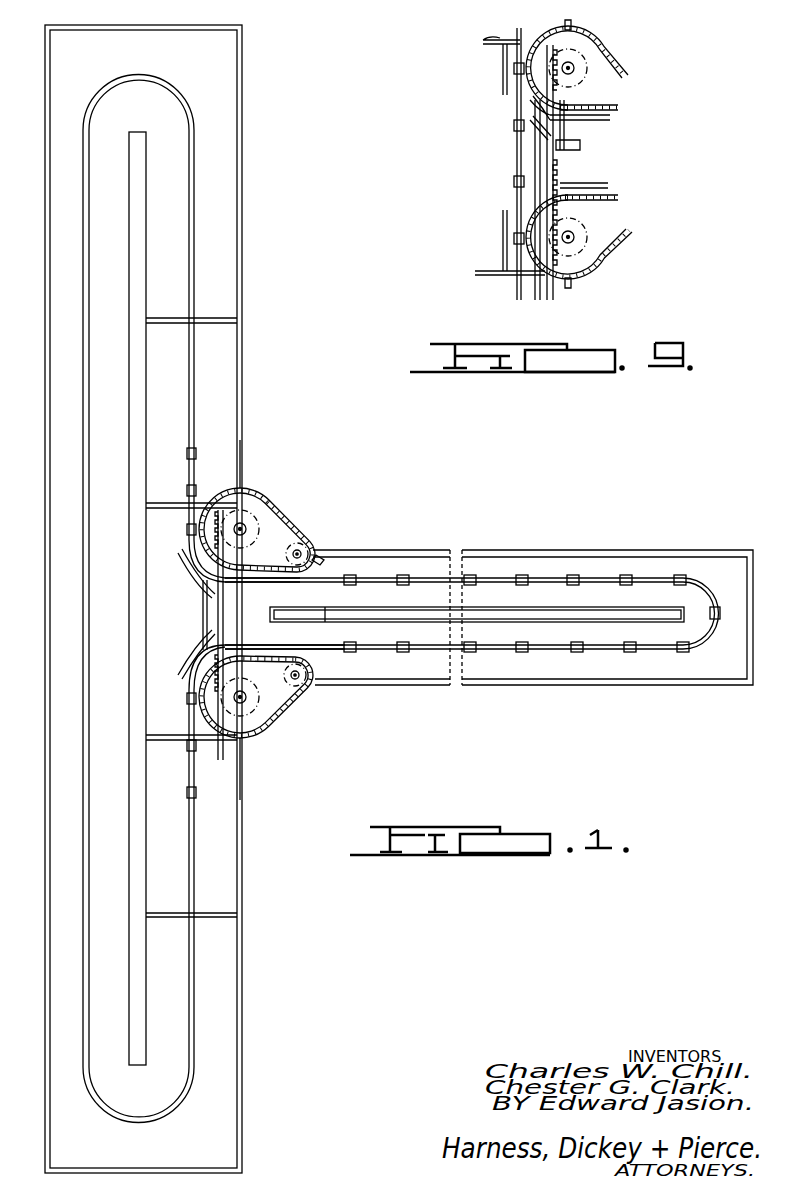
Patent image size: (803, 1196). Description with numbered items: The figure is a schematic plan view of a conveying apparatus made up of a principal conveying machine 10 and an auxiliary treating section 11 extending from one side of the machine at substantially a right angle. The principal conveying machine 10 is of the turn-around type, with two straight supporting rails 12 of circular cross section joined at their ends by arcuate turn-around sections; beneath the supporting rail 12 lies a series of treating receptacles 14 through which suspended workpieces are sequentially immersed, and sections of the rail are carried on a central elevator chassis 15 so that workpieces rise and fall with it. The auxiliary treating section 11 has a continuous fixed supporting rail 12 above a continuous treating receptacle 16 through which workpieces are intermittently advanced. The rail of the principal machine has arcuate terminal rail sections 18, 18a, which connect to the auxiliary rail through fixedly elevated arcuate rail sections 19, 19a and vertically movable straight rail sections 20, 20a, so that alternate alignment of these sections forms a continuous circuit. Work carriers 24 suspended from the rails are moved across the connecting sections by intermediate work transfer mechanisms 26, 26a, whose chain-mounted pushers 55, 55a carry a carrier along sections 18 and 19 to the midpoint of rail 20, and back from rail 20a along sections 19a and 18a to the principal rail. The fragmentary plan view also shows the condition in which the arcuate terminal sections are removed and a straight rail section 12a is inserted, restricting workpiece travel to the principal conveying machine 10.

In FIG. 1, the principal conveying machine 10 is at (252, 292).
In FIG. 1, the auxiliary treating section 11 is at (437, 548).
In FIG. 1, the supporting rail 12 is at (195, 202).
In FIG. 9, the supporting rail 12 is at (500, 41).
In FIG. 9, the straight rail section 12a is at (516, 132).
In FIG. 1, the treating receptacles 14 is at (215, 100).
In FIG. 1, the central elevator chassis 15 is at (135, 840).
In FIG. 1, the continuous treating receptacle 16 is at (530, 556).
In FIG. 1, the arcuate terminal rail section 18 is at (195, 662).
In FIG. 1, the arcuate terminal rail section 18a is at (190, 578).
In FIG. 1, the fixedly elevated arcuate rail section 19 is at (244, 642).
In FIG. 1, the fixedly elevated arcuate rail section 19a is at (240, 590).
In FIG. 1, the vertically movable straight rail section 20 is at (304, 642).
In FIG. 1, the vertically movable straight rail section 20a is at (298, 590).
In FIG. 1, the work carriers 24 is at (628, 576).
In FIG. 9, the work carriers 24 is at (514, 183).
In FIG. 1, the intermediate work transfer mechanism 26 is at (292, 706).
In FIG. 9, the intermediate work transfer mechanism 26 is at (612, 265).
In FIG. 1, the intermediate work transfer mechanism 26a is at (283, 508).
In FIG. 9, the intermediate work transfer mechanism 26a is at (620, 60).
In FIG. 1, the pusher 55 is at (219, 760).
In FIG. 1, the pusher 55a is at (322, 570).